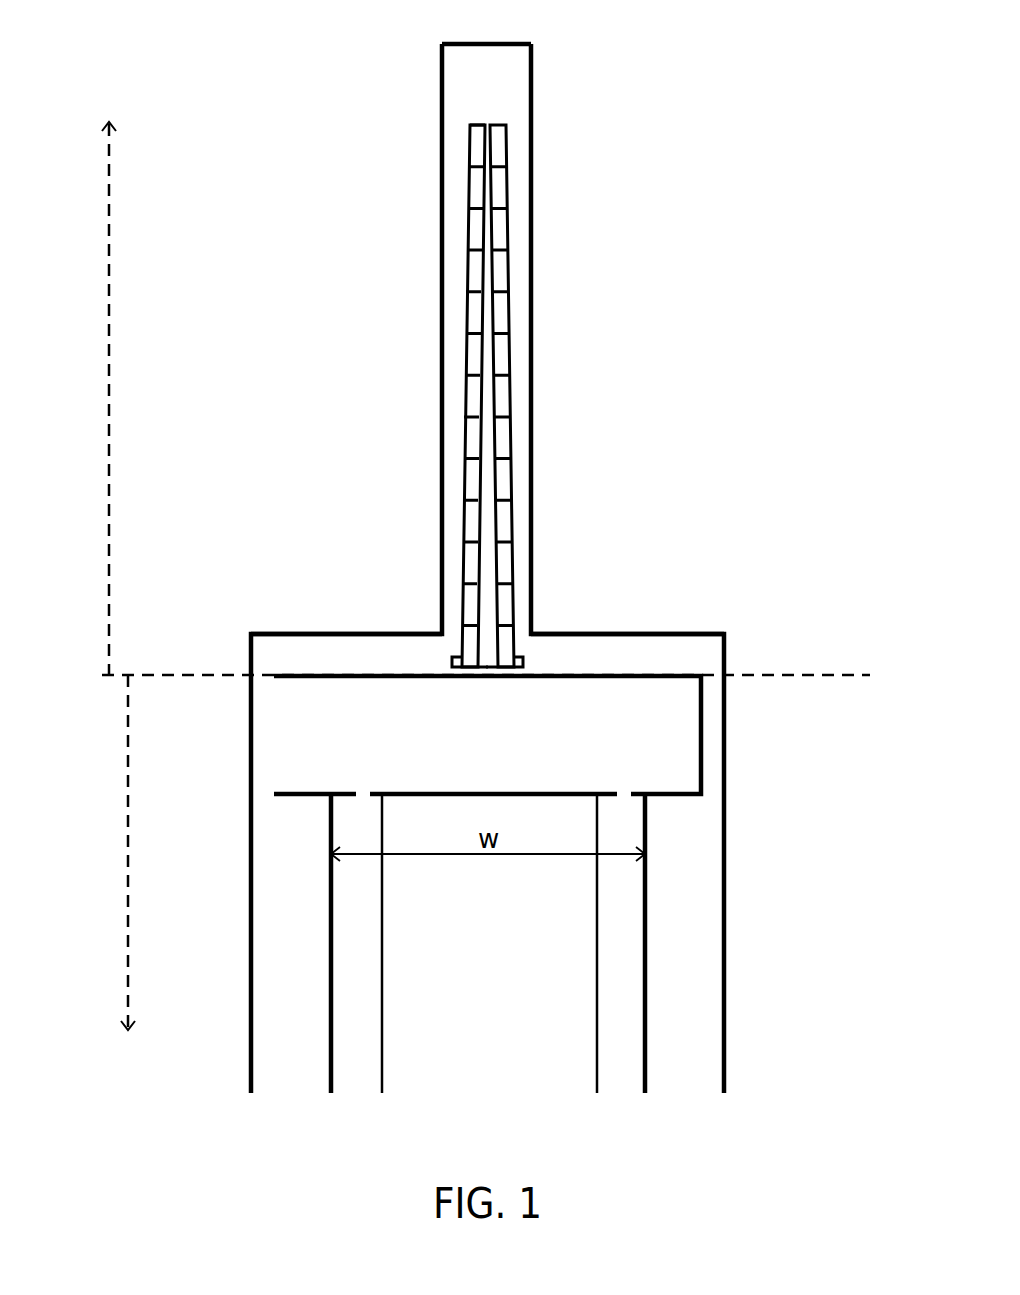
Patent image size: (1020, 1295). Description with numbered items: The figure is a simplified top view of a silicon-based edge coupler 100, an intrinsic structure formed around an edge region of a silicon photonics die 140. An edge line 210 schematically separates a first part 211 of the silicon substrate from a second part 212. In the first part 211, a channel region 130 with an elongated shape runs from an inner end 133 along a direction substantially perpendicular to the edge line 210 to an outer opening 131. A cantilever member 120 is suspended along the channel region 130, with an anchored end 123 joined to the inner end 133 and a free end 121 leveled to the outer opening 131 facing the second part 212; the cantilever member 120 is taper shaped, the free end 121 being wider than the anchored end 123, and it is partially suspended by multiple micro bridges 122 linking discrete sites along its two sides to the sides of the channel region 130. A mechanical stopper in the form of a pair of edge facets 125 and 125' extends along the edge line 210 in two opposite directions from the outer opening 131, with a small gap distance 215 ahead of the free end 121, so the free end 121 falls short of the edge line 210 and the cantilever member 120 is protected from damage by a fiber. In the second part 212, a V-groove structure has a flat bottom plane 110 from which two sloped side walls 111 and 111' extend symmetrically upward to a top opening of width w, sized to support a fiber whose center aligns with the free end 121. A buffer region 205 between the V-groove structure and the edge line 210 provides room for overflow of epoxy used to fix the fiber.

The silicon-based edge coupler 100 is at (598, 331).
The flat bottom plane 110 is at (518, 959).
The sloped side wall 111 is at (315, 943).
The sloped side wall 111' is at (722, 943).
The cantilever member 120 is at (483, 490).
The free end 121 is at (457, 655).
The micro bridges 122 is at (478, 465).
The anchored end 123 is at (478, 125).
The edge facet 125 is at (346, 624).
The edge facet 125' is at (643, 624).
The channel region 130 is at (514, 533).
The outer opening 131 is at (520, 662).
The inner end 133 is at (500, 125).
The silicon photonics die 140 is at (252, 482).
The buffer region 205 is at (343, 740).
The edge line 210 is at (213, 662).
The first part 211 is at (131, 372).
The second part 212 is at (105, 871).
The gap distance 215 is at (455, 638).